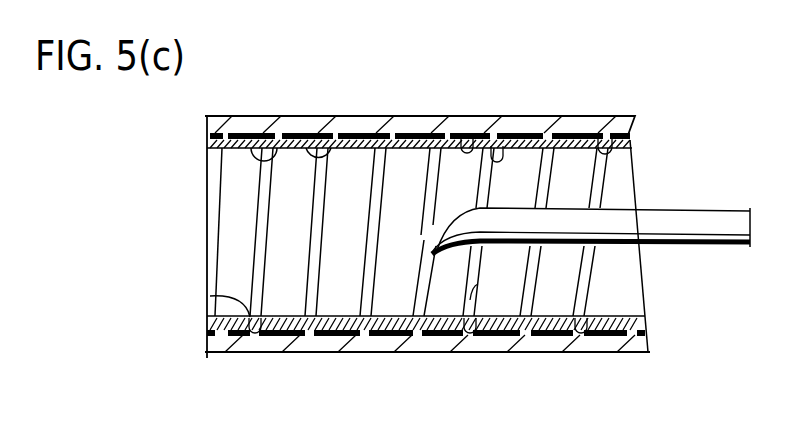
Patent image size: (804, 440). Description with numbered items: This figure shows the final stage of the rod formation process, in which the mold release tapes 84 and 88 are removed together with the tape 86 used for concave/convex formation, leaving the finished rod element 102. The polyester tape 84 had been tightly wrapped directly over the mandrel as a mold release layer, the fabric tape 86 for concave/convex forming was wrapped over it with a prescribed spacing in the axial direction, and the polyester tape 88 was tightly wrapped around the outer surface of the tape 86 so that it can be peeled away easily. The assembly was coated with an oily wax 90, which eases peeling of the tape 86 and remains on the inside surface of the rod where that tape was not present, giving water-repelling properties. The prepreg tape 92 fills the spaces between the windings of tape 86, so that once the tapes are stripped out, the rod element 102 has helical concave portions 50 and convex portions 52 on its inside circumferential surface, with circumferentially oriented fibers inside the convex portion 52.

The concave portion 50 is at (459, 133).
The convex portion 52 is at (500, 158).
The polyester tape 84 is at (672, 247).
The tape for concave/convex forming 86 is at (700, 247).
The polyester tape 88 is at (247, 114).
The oily wax 90 is at (476, 284).
The prepreg tape 92 is at (305, 128).
The rod element 102 is at (379, 107).